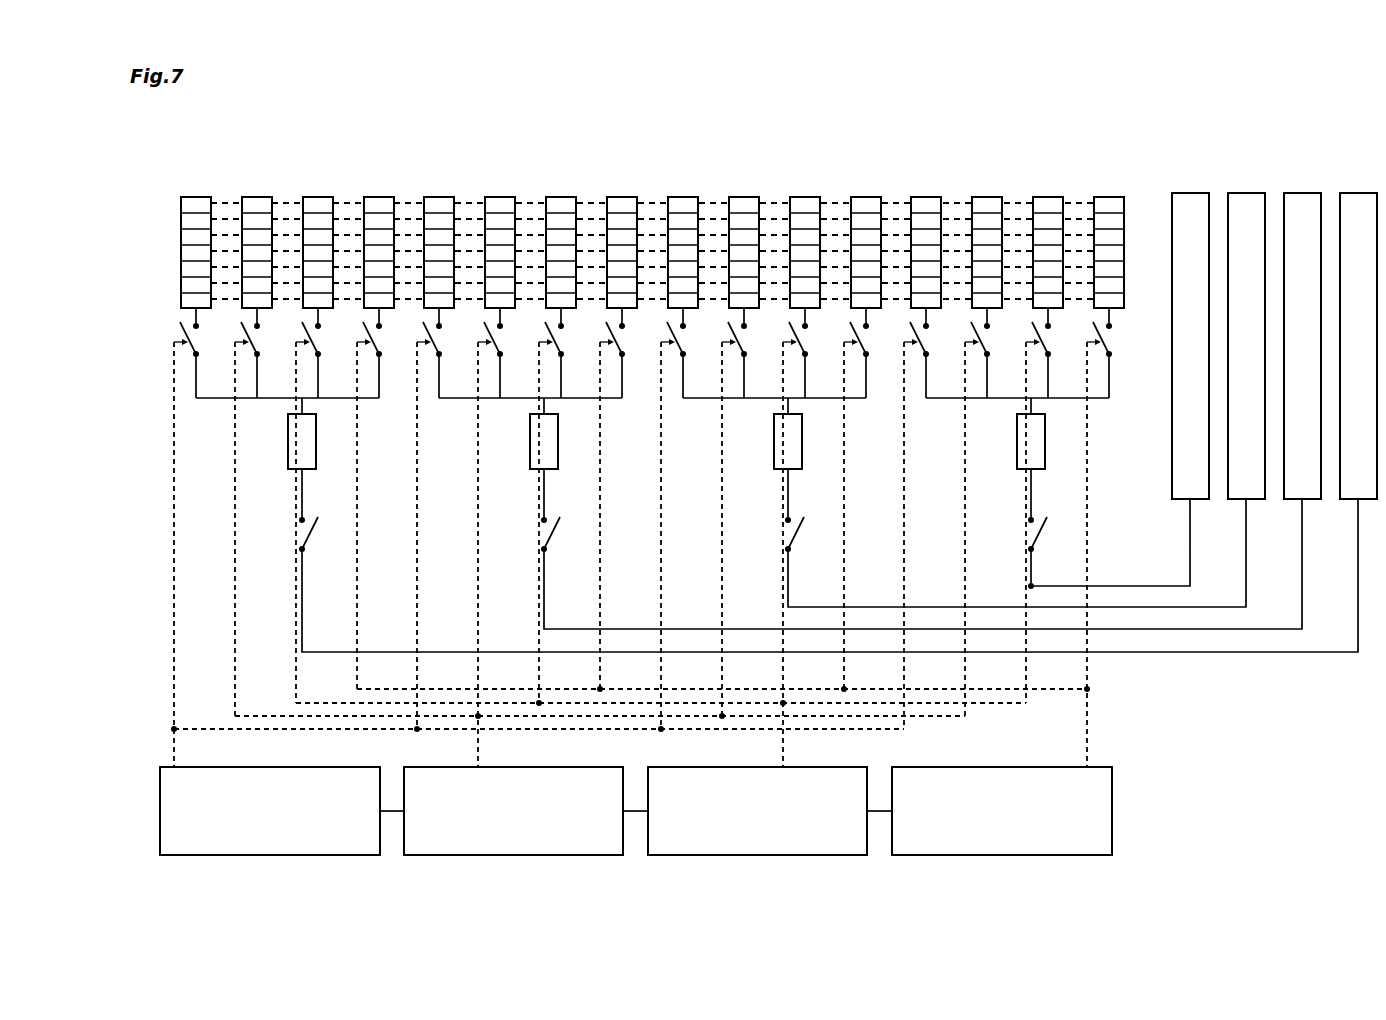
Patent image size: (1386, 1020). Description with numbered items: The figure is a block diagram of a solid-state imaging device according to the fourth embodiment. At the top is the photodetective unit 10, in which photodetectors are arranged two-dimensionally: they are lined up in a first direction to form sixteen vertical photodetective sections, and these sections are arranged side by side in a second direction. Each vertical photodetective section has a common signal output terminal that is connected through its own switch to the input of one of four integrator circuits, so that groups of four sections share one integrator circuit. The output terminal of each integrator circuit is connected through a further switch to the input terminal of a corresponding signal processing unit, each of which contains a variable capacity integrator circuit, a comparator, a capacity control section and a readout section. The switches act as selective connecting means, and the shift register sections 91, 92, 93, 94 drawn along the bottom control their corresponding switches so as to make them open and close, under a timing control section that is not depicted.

The photodetective unit 10 is at (175, 125).
The shift register section 91 is at (998, 857).
The shift register section 92 is at (754, 857).
The shift register section 93 is at (510, 857).
The shift register section 94 is at (266, 857).